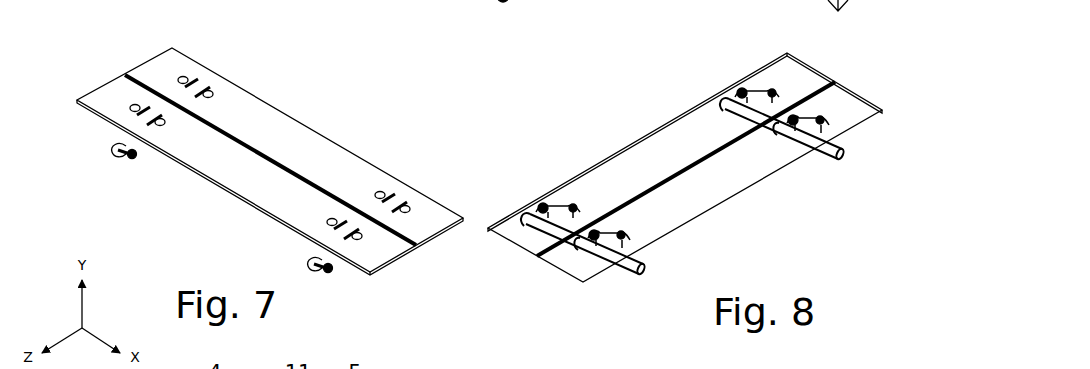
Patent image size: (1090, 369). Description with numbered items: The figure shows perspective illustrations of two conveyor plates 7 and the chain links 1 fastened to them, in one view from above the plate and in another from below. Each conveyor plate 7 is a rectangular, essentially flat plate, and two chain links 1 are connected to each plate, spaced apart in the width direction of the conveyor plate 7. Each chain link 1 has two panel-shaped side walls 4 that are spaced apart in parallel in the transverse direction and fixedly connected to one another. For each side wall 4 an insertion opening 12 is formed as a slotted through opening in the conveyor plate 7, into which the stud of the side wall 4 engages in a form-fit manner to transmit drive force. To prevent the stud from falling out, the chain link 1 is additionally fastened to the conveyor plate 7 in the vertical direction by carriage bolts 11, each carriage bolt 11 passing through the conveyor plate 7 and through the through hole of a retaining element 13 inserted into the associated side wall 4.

In FIG. 7, the chain link 1 is at (148, 163).
In FIG. 8, the chain link 1 is at (558, 258).
In FIG. 8, the side wall 4 is at (760, 95).
In FIG. 7, the conveyor plate 7 is at (293, 152).
In FIG. 8, the conveyor plate 7 is at (655, 150).
In FIG. 7, the carriage bolt 11 is at (178, 78).
In FIG. 7, the insertion opening 12 is at (212, 80).
In FIG. 8, the retaining element 13 is at (775, 95).